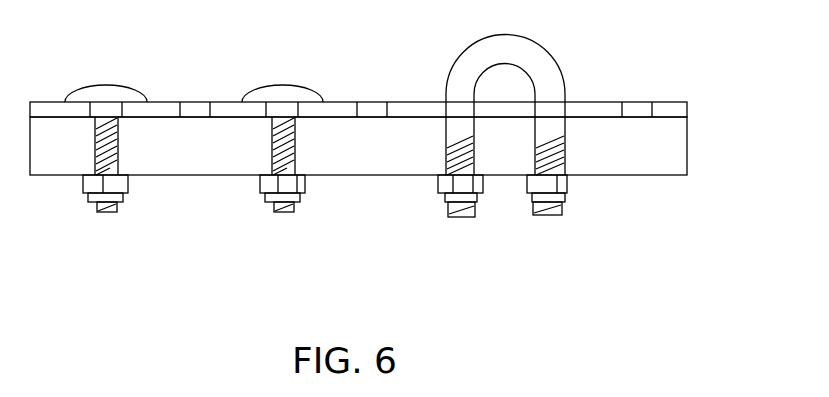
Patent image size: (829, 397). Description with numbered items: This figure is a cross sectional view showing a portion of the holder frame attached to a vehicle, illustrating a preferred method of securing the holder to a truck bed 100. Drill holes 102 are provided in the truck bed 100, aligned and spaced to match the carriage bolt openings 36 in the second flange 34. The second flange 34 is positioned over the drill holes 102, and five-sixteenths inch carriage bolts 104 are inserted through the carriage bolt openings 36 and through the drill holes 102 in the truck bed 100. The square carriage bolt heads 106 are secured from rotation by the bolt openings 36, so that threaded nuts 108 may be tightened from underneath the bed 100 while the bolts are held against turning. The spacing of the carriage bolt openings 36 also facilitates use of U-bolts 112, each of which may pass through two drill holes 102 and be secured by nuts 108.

The second flange 34 is at (42, 99).
The carriage bolt openings 36 is at (440, 107).
The truck bed 100 is at (61, 150).
The drill holes 102 is at (301, 144).
The carriage bolts 104 is at (269, 219).
The square carriage bolt heads 106 is at (272, 81).
The threaded nuts 108 is at (309, 186).
The U-bolts 112 is at (553, 59).